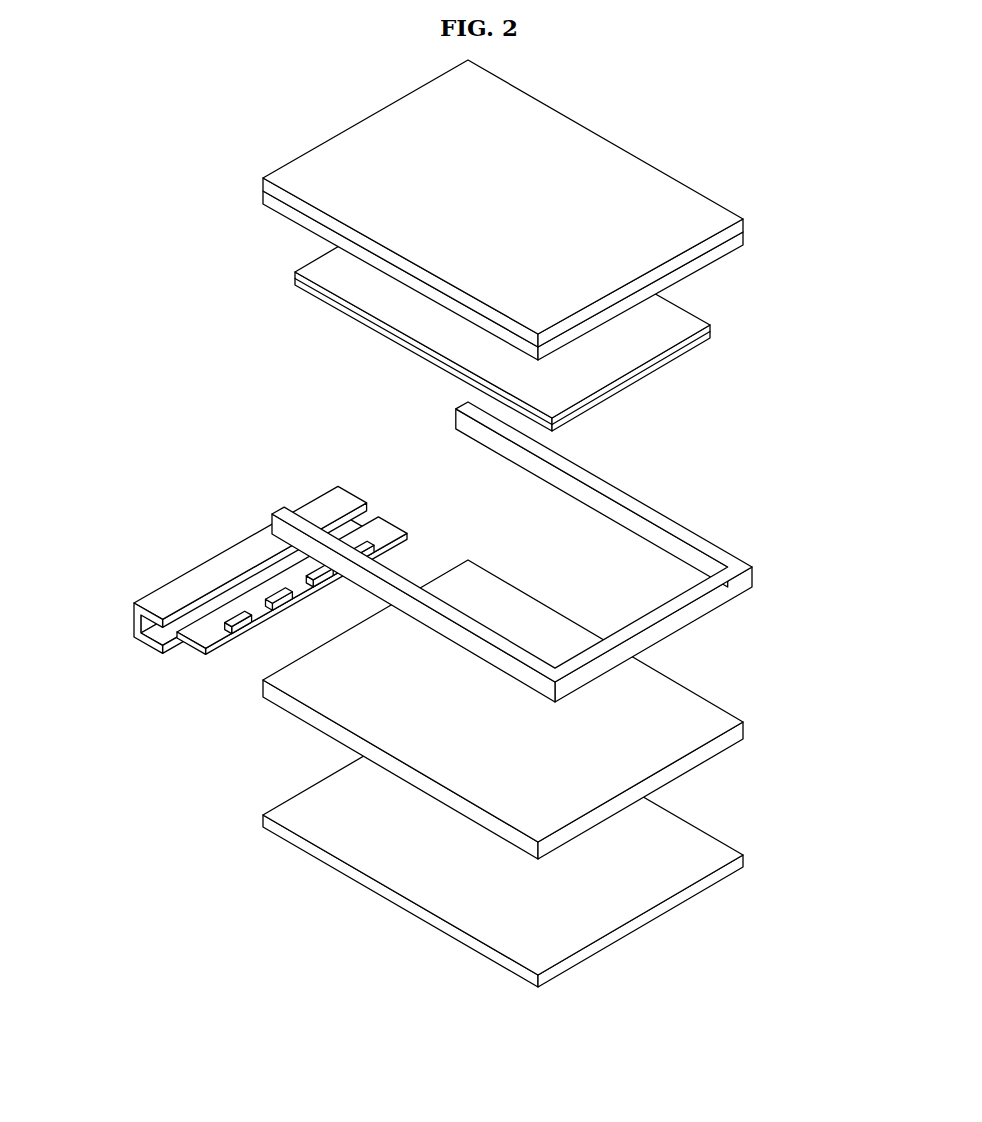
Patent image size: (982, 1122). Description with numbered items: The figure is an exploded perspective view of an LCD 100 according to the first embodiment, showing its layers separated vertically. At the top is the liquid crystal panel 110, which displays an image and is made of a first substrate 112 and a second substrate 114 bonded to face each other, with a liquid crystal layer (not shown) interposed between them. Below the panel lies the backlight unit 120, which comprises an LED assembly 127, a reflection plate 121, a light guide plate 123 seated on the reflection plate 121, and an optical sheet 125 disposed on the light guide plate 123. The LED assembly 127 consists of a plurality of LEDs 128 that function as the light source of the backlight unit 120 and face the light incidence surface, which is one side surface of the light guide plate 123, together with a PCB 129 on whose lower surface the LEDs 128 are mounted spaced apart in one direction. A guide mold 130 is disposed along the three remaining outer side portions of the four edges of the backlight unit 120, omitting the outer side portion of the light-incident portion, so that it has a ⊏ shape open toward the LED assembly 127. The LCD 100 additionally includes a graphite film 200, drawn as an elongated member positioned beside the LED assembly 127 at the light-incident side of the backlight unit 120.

The LCD 100 is at (552, 1050).
The liquid crystal panel 110 is at (570, 210).
The first substrate 112 is at (747, 240).
The second substrate 114 is at (747, 224).
The backlight unit 120 is at (92, 305).
The reflection plate 121 is at (746, 858).
The light guide plate 123 is at (746, 730).
The optical sheet 125 is at (714, 328).
The LED assembly 127 is at (288, 639).
The LEDs 128 is at (237, 640).
The PCB 129 is at (192, 648).
The guide mold 130 is at (757, 575).
The graphite film 200 is at (231, 560).